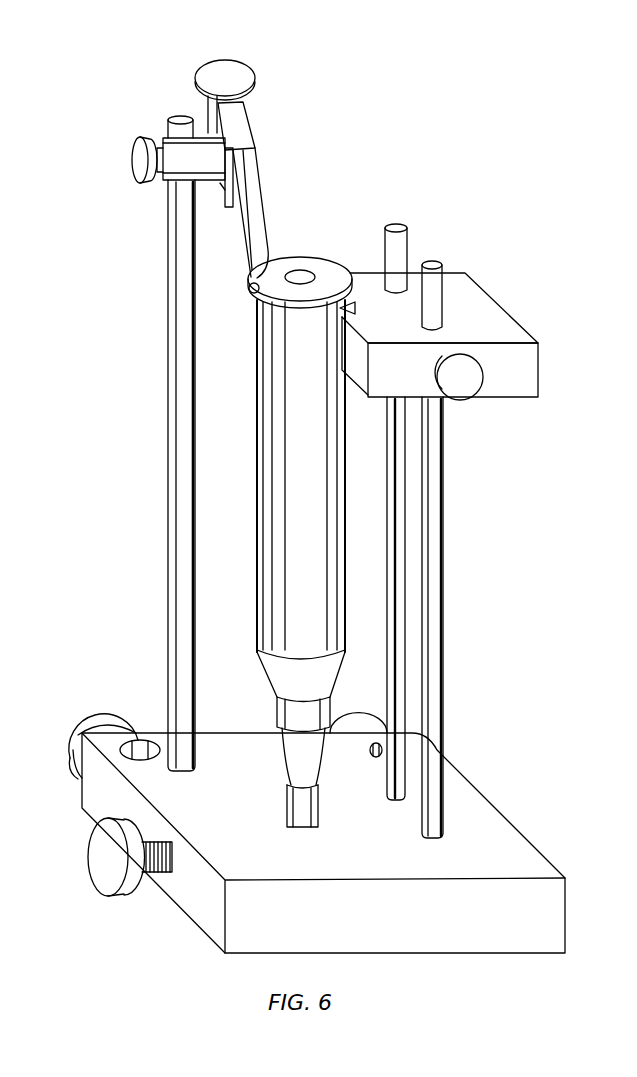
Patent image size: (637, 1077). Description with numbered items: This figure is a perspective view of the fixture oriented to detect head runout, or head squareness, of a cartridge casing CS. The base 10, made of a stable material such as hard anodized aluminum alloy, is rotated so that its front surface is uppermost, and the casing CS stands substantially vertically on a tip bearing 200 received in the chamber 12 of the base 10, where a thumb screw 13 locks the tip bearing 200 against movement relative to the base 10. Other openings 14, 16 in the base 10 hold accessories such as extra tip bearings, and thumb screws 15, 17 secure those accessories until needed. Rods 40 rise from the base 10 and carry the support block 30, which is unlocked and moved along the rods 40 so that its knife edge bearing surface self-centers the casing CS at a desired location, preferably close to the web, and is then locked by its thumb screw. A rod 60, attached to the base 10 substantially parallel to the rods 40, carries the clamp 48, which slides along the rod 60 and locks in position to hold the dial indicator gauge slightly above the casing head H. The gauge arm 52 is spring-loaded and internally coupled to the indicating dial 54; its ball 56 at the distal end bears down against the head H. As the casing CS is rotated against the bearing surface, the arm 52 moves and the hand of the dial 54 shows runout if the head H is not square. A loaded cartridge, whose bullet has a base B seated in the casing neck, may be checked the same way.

The base 10 is at (178, 934).
The chamber 12 is at (303, 830).
The thumb screw 13 is at (92, 858).
The opening 14 is at (144, 741).
The thumb screw 15 is at (74, 752).
The opening 16 is at (370, 752).
The thumb screw 17 is at (356, 716).
The block 30 is at (474, 292).
The rods 40 is at (398, 648).
The clamp 48 is at (130, 163).
The arm 52 is at (248, 276).
The indicating dial 54 is at (226, 72).
The ball 56 is at (249, 291).
The rod 60 is at (172, 632).
The tip bearing 200 is at (320, 808).
The base of bullet B is at (283, 765).
The cartridge casing CS is at (270, 380).
The head H is at (324, 270).